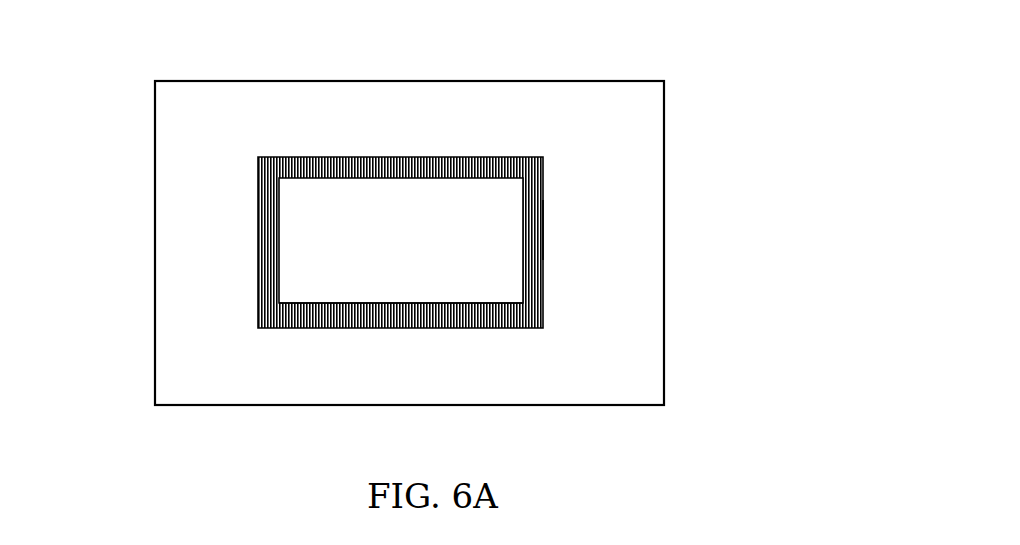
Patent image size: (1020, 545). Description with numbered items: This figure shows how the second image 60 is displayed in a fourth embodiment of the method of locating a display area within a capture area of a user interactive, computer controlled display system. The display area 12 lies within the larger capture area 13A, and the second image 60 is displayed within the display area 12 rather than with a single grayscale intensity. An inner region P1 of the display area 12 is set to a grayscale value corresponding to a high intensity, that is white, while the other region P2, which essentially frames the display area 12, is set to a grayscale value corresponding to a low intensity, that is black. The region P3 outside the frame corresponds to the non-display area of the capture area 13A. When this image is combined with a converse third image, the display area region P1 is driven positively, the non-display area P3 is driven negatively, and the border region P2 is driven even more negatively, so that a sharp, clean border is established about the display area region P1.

The second image 60 is at (138, 217).
The capture area 13A is at (458, 80).
The display area 12 is at (490, 157).
The non-display area P3 is at (572, 139).
The display area border region P2 is at (532, 233).
The display area region P1 is at (457, 288).